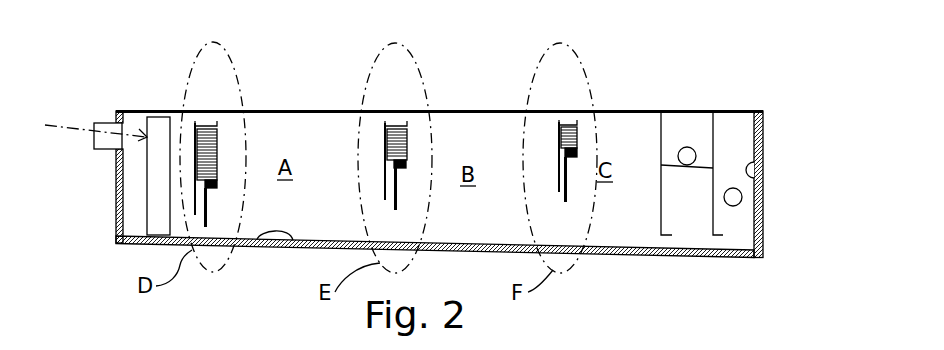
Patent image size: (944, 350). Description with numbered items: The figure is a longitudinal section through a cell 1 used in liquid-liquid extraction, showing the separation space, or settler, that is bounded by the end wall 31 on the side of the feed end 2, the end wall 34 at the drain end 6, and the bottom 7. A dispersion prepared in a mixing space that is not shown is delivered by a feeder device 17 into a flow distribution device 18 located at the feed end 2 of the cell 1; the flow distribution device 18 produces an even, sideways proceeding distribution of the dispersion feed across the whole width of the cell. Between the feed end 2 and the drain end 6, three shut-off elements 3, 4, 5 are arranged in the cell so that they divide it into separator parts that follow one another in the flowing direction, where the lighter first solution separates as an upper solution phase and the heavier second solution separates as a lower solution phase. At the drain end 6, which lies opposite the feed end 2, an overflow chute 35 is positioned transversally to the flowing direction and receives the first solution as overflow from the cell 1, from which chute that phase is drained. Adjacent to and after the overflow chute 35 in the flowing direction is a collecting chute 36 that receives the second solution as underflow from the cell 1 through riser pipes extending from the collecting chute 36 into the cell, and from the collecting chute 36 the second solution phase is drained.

The cell 1 is at (312, 125).
The feed end 2 is at (129, 103).
The shut-off element 3 is at (205, 130).
The shut-off element 4 is at (398, 130).
The shut-off element 5 is at (565, 125).
The drain end 6 is at (710, 65).
The bottom 7 is at (258, 242).
The feeder device 17 is at (102, 119).
The flow distribution device 18 is at (157, 82).
The end wall 31 is at (116, 217).
The end wall 34 is at (762, 181).
The overflow chute 35 is at (691, 130).
The collecting chute 36 is at (740, 133).